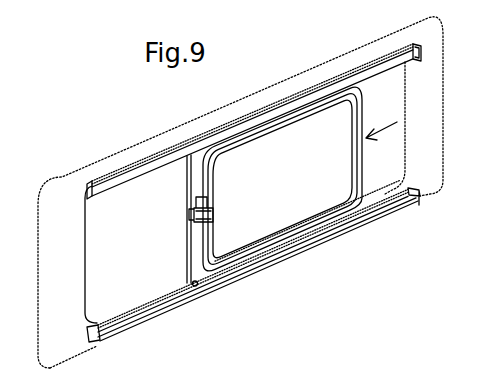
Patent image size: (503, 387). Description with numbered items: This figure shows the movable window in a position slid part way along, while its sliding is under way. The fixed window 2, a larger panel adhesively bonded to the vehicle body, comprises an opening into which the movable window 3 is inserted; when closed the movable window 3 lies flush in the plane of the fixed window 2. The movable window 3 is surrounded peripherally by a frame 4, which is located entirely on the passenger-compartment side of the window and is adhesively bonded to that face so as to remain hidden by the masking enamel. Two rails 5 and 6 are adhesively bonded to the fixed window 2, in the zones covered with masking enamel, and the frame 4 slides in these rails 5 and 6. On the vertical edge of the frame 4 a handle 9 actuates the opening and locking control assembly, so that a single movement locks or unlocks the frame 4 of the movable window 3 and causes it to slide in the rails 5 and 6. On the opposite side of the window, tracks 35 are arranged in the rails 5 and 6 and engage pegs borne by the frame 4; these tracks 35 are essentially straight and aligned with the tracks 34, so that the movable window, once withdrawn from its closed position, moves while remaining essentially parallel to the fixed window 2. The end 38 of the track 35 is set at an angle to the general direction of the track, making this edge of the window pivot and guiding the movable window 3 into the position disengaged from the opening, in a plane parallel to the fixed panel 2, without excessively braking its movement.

The fixed window 2 is at (141, 250).
The movable window 3 is at (293, 190).
The frame 4 is at (293, 240).
The rail 5 is at (200, 298).
The rail 6 is at (93, 183).
The handle 9 is at (214, 214).
The track 34 is at (133, 315).
The track 35 is at (380, 207).
The end of the track 38 is at (407, 197).